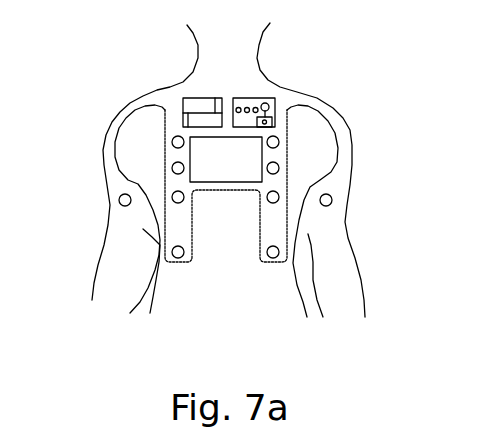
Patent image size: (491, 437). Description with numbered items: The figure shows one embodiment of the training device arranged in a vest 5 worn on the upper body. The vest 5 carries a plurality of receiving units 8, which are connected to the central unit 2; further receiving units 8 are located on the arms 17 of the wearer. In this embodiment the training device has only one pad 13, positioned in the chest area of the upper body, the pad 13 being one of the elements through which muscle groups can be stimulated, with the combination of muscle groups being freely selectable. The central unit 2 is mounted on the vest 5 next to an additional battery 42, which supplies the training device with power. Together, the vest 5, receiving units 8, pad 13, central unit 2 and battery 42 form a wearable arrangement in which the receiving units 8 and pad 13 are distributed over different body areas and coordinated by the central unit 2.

The central unit 2 is at (290, 89).
The vest 5 is at (226, 203).
The receiving unit 8 is at (269, 242).
The pad 13 is at (226, 200).
The arm 17 is at (232, 211).
The additional battery 42 is at (160, 87).